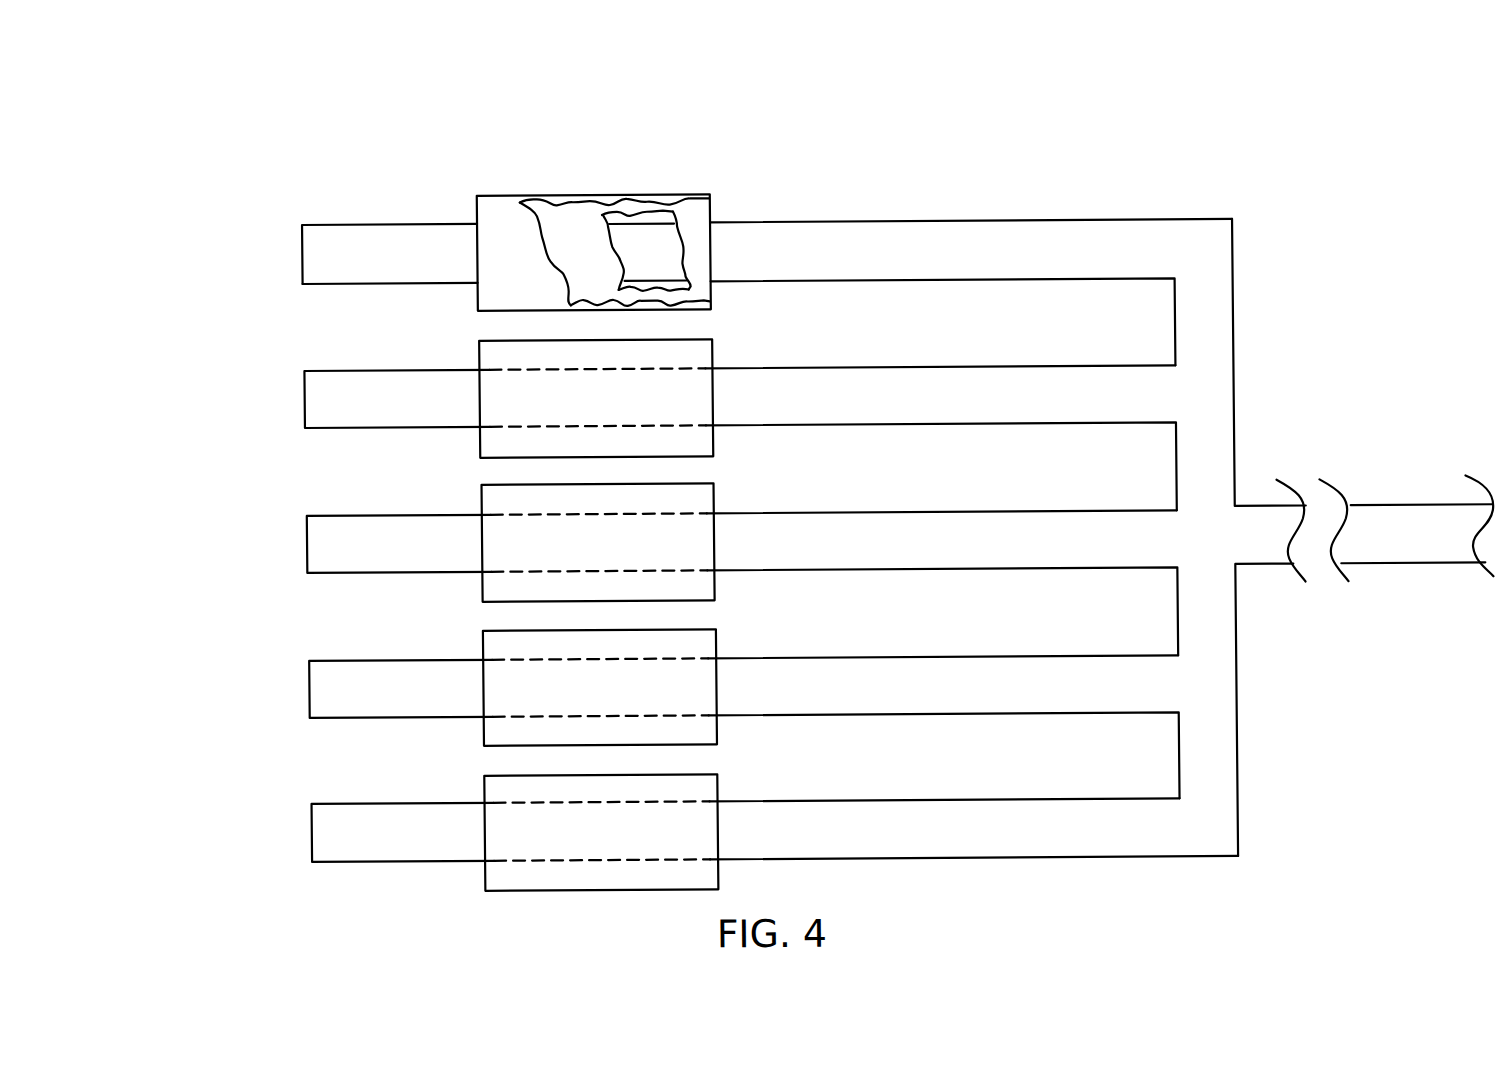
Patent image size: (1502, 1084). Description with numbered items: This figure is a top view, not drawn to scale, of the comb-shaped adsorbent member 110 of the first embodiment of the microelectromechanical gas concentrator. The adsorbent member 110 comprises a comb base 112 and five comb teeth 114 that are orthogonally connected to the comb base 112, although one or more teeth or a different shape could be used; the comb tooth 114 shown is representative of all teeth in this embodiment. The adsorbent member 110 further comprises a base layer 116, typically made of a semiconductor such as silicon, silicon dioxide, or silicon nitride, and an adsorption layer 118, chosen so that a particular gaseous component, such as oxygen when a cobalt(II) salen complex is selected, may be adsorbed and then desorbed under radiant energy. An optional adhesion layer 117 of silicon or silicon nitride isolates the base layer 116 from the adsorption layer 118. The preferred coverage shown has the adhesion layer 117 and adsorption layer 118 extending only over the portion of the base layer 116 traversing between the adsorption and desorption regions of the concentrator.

The adsorbent member 110 is at (372, 165).
The comb base 112 is at (1201, 487).
The comb tooth 114 is at (306, 256).
The base layer 116 is at (647, 245).
The adhesion layer 117 is at (576, 224).
The adsorption layer 118 is at (498, 221).